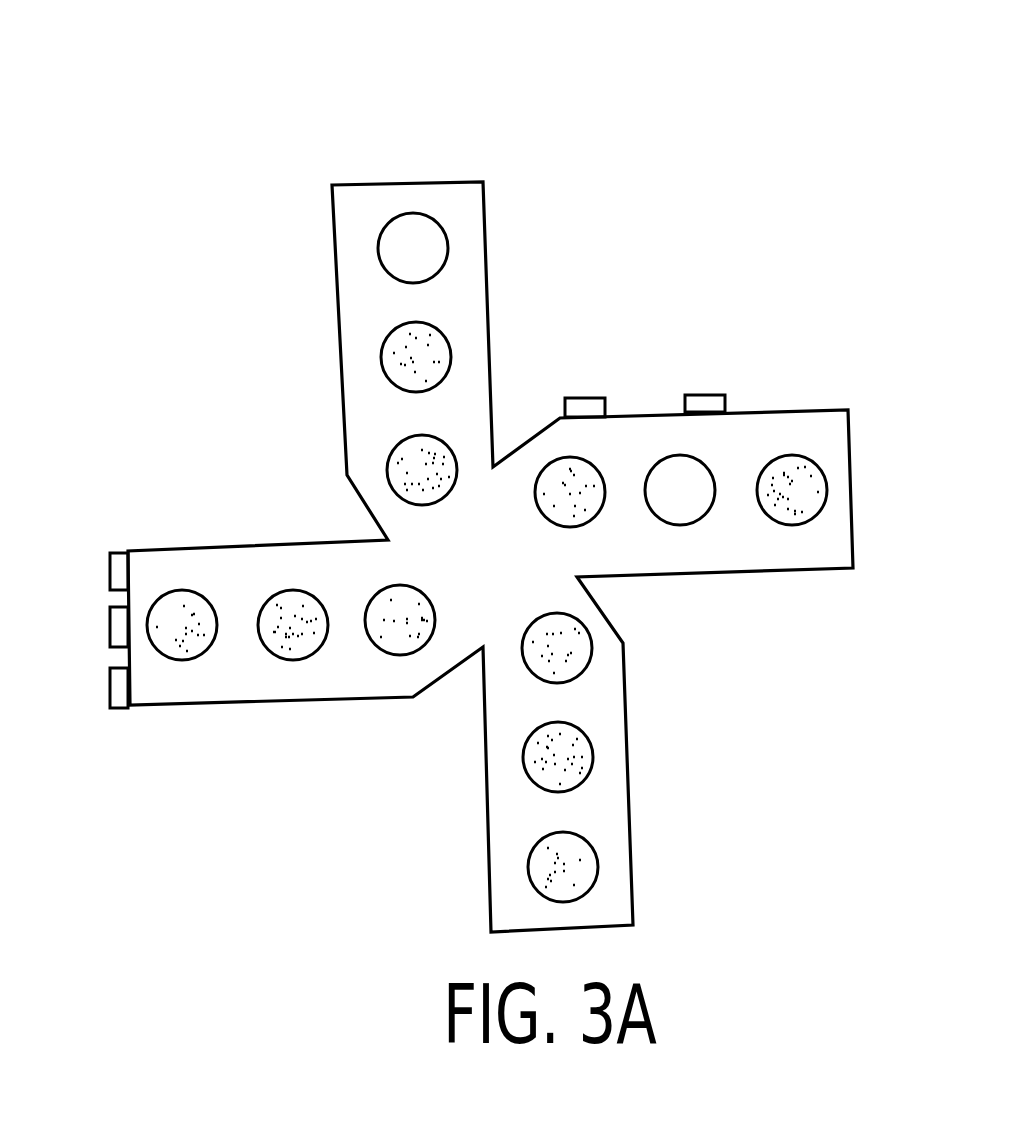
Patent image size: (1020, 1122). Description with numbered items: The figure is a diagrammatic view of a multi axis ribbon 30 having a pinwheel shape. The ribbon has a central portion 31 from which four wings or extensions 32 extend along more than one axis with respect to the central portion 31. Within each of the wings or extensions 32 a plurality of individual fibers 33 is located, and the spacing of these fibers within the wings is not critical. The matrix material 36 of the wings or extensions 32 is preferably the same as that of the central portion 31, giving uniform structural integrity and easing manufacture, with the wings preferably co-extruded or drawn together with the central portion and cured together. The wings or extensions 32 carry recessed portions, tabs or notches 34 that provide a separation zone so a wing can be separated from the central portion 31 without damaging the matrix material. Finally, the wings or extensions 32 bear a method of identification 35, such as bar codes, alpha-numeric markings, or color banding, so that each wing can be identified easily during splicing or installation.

The multi axis ribbon 30 is at (422, 152).
The central portion 31 is at (505, 552).
The wings or extensions 32 is at (347, 230).
The individual fibers 33 is at (598, 867).
The recessed portions, tabs or notches 34 is at (480, 652).
The method of identification 35 is at (700, 395).
The matrix material 36 is at (840, 427).